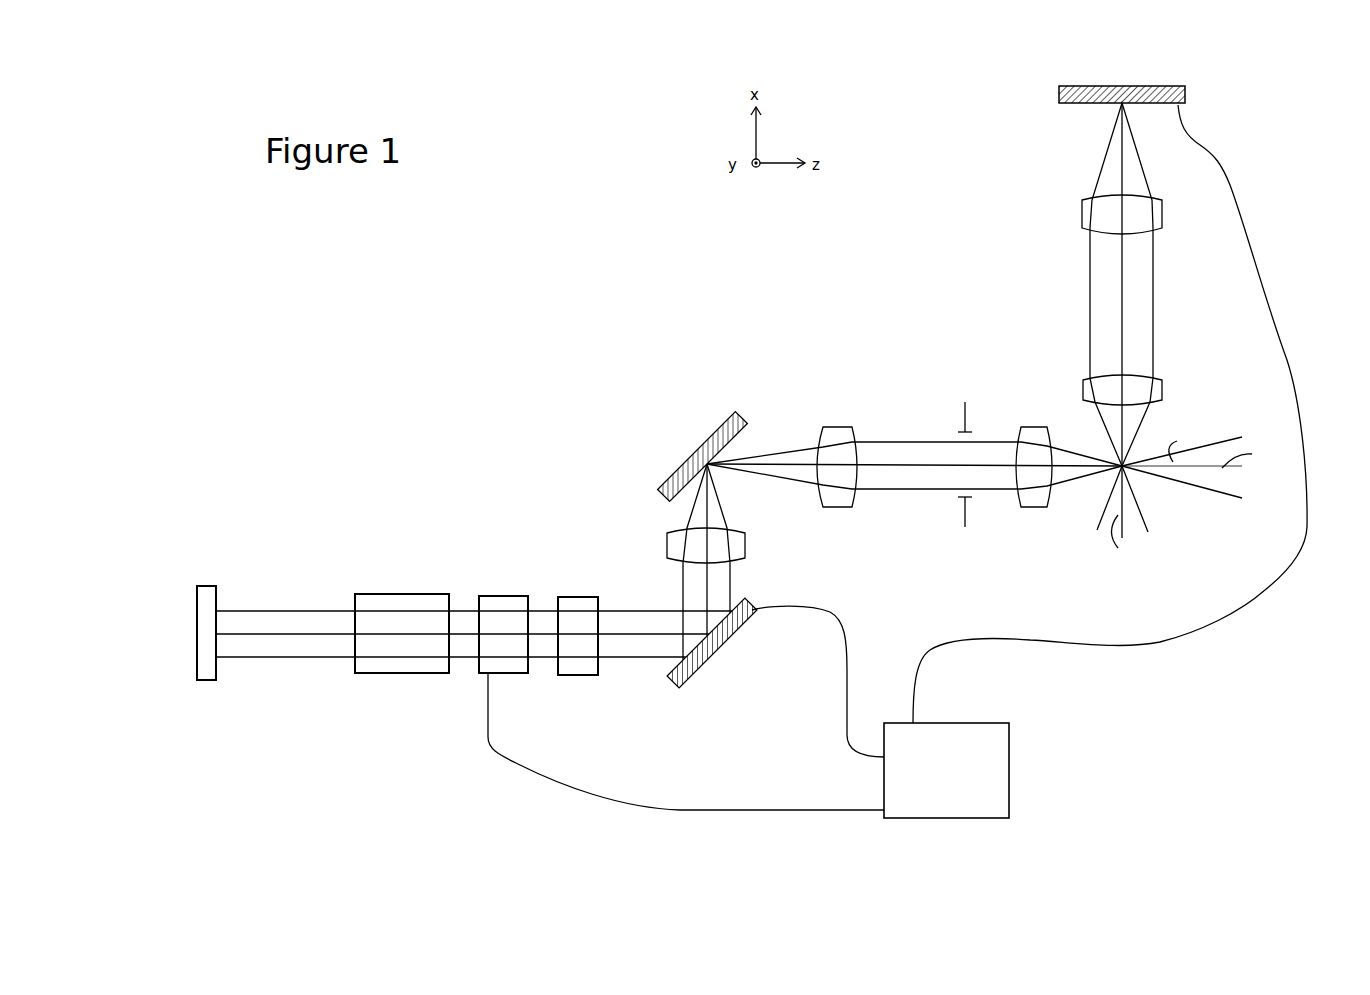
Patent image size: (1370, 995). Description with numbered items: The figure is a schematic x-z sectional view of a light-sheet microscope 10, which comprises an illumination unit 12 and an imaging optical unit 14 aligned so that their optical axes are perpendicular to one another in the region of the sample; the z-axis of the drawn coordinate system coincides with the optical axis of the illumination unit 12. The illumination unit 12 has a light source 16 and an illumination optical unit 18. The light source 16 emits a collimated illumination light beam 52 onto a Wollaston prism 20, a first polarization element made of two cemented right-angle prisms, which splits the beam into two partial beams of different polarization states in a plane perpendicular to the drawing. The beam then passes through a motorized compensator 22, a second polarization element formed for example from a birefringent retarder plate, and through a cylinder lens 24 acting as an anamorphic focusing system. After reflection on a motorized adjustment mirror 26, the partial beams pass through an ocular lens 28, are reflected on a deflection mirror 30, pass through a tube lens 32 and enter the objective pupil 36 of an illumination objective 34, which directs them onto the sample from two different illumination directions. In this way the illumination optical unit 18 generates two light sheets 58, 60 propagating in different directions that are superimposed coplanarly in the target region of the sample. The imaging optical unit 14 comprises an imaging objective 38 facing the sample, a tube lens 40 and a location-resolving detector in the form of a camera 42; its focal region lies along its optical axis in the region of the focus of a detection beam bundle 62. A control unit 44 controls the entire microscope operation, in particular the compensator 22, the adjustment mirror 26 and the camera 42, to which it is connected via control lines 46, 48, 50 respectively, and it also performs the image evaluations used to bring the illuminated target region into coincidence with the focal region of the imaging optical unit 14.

The light-sheet microscope 10 is at (432, 343).
The illumination unit 12 is at (617, 370).
The imaging optical unit 14 is at (1037, 253).
The light source 16 is at (206, 586).
The illumination optical unit 18 is at (887, 368).
The Wollaston prism 20 is at (397, 673).
The motorized compensator 22 is at (514, 674).
The cylinder lens 24 is at (585, 676).
The motorized adjustment mirror 26 is at (710, 662).
The ocular lens 28 is at (745, 545).
The deflection mirror 30 is at (693, 447).
The tube lens 32 is at (836, 426).
The illumination objective 34 is at (1018, 500).
The objective pupil 36 is at (966, 412).
The imaging objective 38 is at (1162, 378).
The tube lens 40 is at (1162, 212).
The camera 42 is at (1172, 86).
The control unit 44 is at (1009, 795).
The control line 46 is at (622, 804).
The control line 48 is at (841, 632).
The control line 50 is at (1254, 265).
The illumination light beam 52 is at (286, 610).
The light sheet 58 is at (1224, 497).
The light sheet 60 is at (1206, 493).
The detection beam bundle 62 is at (1149, 511).